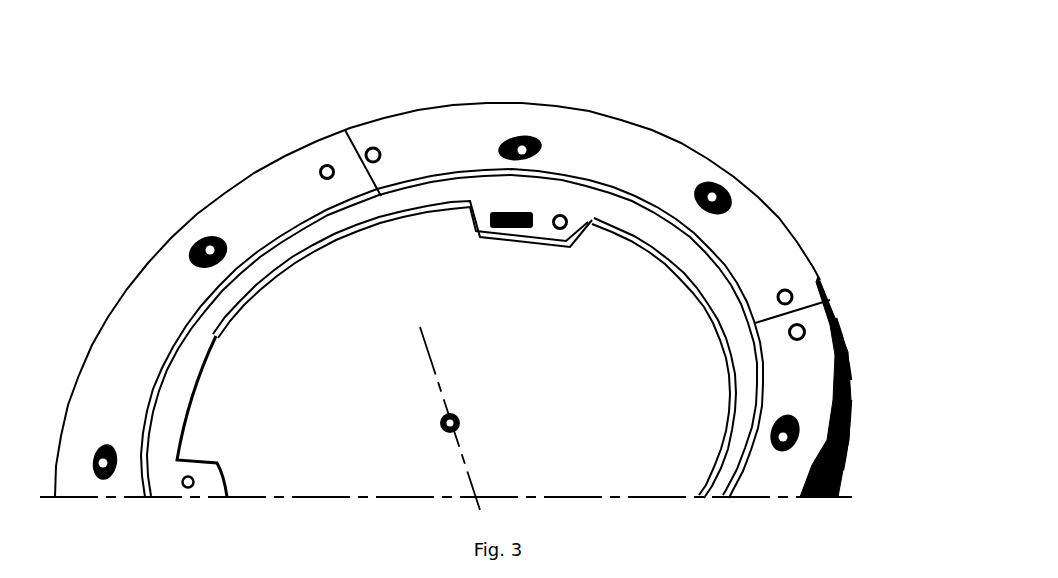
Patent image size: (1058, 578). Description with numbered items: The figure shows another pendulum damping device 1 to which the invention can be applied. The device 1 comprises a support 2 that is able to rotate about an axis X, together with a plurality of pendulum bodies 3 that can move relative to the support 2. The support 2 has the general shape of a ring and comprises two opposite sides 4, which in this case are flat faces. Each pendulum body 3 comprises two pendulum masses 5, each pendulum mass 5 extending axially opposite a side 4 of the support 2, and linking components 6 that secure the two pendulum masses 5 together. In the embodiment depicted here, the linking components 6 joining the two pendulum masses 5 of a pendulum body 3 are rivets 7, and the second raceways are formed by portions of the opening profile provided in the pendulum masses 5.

The pendulum damping device 1 is at (442, 249).
The support 2 is at (474, 349).
The pendulum body 3 is at (915, 303).
The side 4 is at (213, 333).
The pendulum mass 5 is at (870, 391).
The linking component 6 is at (447, 306).
The rivet 7 is at (529, 187).
The axis X is at (473, 418).